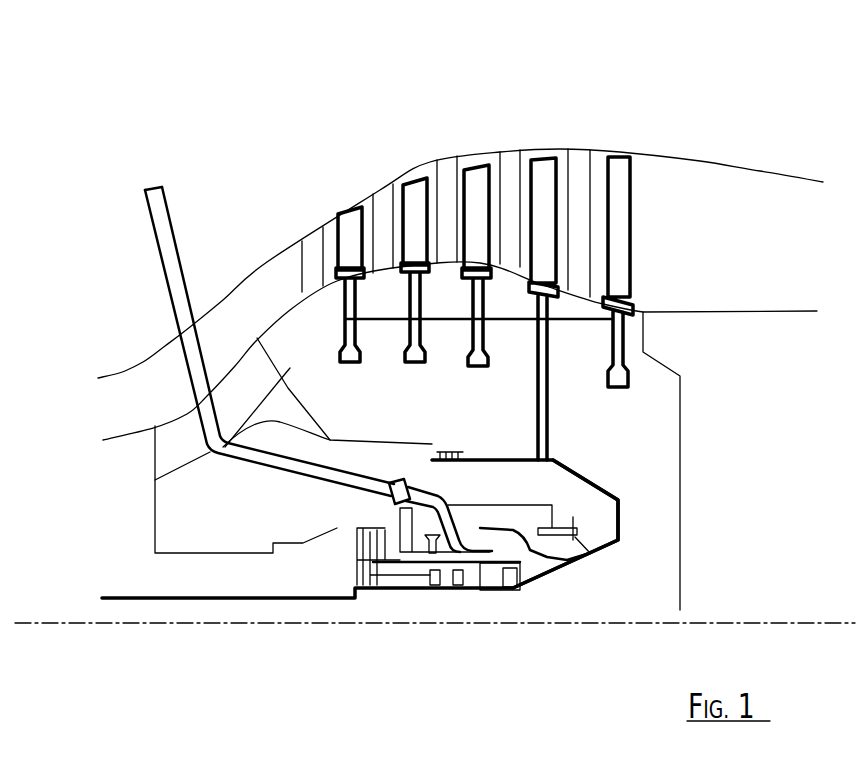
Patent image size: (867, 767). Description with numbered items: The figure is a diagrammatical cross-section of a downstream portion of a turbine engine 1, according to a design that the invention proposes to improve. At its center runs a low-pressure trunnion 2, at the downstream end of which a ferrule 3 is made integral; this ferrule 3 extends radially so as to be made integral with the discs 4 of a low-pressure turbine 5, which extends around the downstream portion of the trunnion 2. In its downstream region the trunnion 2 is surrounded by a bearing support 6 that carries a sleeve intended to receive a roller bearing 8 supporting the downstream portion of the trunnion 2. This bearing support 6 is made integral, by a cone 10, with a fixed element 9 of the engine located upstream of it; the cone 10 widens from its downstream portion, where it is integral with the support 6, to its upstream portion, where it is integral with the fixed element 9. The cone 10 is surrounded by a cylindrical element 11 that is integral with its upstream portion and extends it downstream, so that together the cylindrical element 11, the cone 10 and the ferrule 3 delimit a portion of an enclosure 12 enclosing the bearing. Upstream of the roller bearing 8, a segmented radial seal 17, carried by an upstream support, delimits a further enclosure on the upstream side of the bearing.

The turbine engine 1 is at (194, 70).
The low-pressure trunnion 2 is at (605, 547).
The ferrule 3 is at (587, 473).
The discs 4 is at (485, 365).
The low-pressure turbine 5 is at (593, 115).
The bearing support 6 is at (483, 522).
The roller bearing 8 is at (474, 601).
The fixed element 9 is at (272, 428).
The cone 10 is at (313, 471).
The cylindrical element 11 is at (352, 462).
The enclosure 12 is at (375, 458).
The segmented radial seal 17 is at (378, 601).